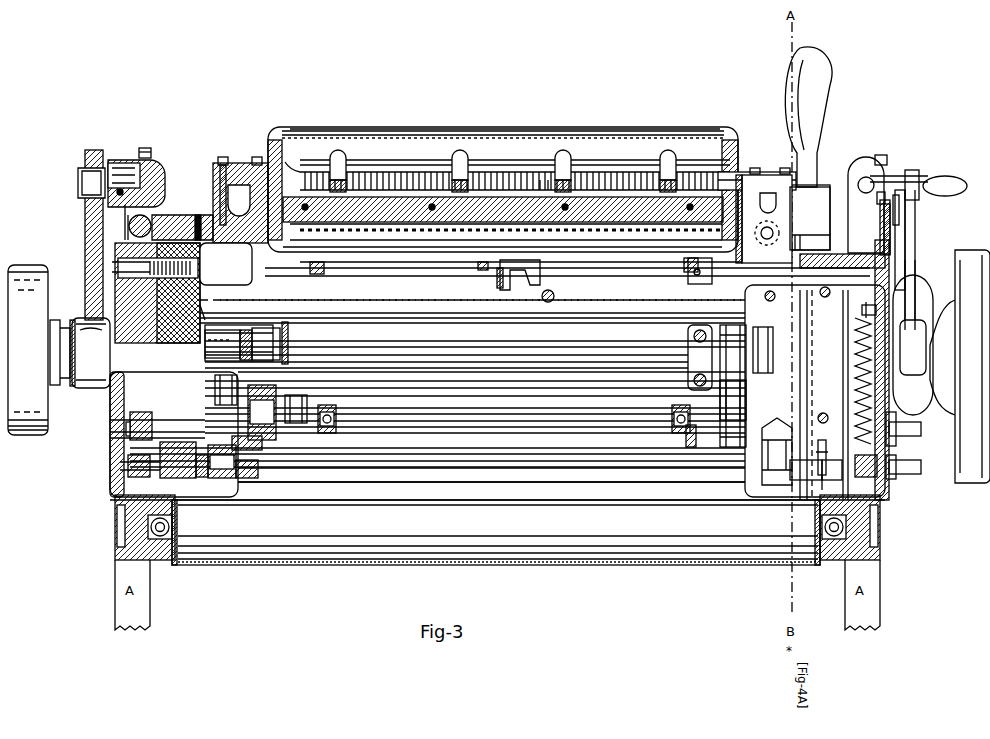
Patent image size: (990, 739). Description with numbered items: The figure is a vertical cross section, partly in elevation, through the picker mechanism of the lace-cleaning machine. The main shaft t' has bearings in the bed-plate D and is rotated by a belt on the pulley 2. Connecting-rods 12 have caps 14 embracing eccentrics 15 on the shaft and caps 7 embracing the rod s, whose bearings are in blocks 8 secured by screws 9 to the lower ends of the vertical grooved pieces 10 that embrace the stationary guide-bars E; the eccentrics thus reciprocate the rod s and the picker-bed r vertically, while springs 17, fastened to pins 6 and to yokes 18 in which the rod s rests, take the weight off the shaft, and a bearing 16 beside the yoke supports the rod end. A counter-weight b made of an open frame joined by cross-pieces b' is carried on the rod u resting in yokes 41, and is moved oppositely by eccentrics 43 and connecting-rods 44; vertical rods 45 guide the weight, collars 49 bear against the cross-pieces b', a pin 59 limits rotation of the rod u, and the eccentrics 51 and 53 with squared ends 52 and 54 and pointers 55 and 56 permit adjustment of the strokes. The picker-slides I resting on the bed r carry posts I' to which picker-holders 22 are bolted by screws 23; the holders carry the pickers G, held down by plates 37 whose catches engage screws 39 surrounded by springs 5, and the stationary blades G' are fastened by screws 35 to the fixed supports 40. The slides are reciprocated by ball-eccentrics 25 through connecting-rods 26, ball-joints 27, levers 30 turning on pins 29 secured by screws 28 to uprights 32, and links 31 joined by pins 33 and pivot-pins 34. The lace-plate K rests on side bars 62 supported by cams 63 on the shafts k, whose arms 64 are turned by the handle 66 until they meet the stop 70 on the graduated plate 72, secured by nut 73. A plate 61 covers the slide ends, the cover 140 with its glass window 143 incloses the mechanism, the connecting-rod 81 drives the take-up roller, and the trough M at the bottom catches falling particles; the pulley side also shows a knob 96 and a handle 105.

The pulley 2 is at (28, 350).
The spiral compression-springs 5 is at (330, 166).
The pins 6 is at (867, 304).
The caps 7 is at (240, 476).
The blocks 8 is at (820, 465).
The screws 9 is at (196, 477).
The vertical grooved pieces 10 is at (524, 395).
The connecting-rods 12 is at (498, 366).
The caps 14 is at (214, 330).
The eccentrics 15 is at (222, 344).
The bearing 16 is at (174, 477).
The springs 17 is at (855, 336).
The yokes 18 is at (138, 477).
The picker-holders 22 is at (504, 194).
The screws 23 is at (240, 148).
The ball-eccentrics 25 is at (90, 353).
The connecting-rods 26 is at (918, 267).
The ball-joints 27 is at (78, 182).
The screws 28 is at (150, 150).
The stationary pins 29 is at (158, 165).
The oscillating levers 30 is at (888, 171).
The links 31 is at (491, 217).
The uprights 32 is at (126, 210).
The pins 33 is at (128, 226).
The pivot-pins 34 is at (200, 221).
The screws 35 is at (562, 185).
The plates 37 is at (445, 162).
The screws 39 is at (310, 205).
The fixed supports 40 is at (740, 210).
The yoke 41 is at (139, 429).
The eccentrics 43 is at (260, 344).
The connecting-rods 44 is at (746, 400).
The vertical rods 45 is at (286, 326).
The collars 49 is at (336, 408).
The eccentrics 51 is at (222, 469).
The squared end 52 is at (912, 470).
The eccentrics 53 is at (247, 443).
The squared end 54 is at (915, 425).
The pointer 55 is at (892, 479).
The pointer 56 is at (896, 418).
The pin 59 is at (686, 432).
The plate 61 is at (520, 275).
The side bars 62 is at (312, 262).
The cams 63 is at (700, 284).
The arms 64 is at (912, 250).
The handle 66 is at (947, 177).
The stop 70 is at (910, 208).
The plate 72 is at (884, 219).
The nut 73 is at (875, 201).
The connecting-rod 81 is at (700, 357).
The flange 96 is at (58, 322).
The handle 105 is at (826, 112).
The cover 140 is at (270, 133).
The glass window 143 is at (470, 124).
The bed-plate D is at (502, 370).
The stationary guide-bars E is at (155, 291).
The pickers G is at (515, 195).
The stationary blades G' is at (286, 161).
The picker-slides I is at (472, 292).
The uprights or posts I' is at (496, 230).
The lace-plate K is at (503, 224).
The trough or drawer M is at (496, 532).
The counter-weight b is at (475, 437).
The cross-pieces b' is at (297, 404).
The shafts k is at (660, 278).
The picker-bed r is at (482, 297).
The rod or bar s is at (588, 457).
The main shaft t' is at (475, 348).
The rod u is at (534, 418).